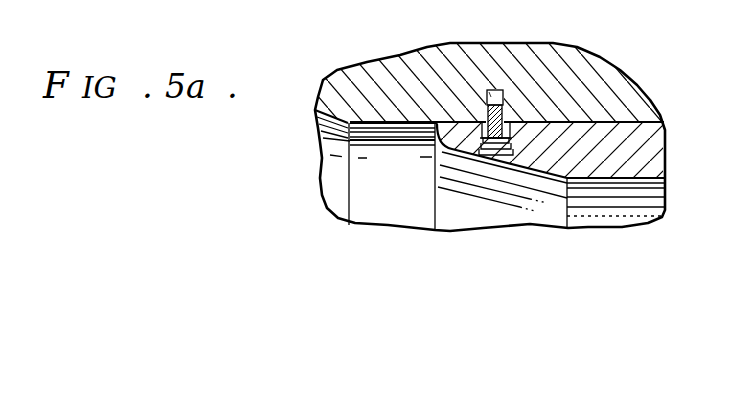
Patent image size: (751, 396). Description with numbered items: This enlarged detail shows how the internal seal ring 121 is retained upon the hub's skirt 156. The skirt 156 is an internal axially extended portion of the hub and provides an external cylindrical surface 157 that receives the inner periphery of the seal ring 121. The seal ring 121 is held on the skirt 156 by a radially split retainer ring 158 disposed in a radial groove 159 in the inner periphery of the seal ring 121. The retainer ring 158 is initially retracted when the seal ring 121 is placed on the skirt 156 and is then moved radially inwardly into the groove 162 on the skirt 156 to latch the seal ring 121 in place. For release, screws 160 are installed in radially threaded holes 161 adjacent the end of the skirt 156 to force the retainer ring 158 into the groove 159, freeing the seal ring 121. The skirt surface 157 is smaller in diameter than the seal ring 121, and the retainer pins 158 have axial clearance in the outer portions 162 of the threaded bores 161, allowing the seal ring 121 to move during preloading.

The internal seal ring 121 is at (573, 56).
The skirt 156 is at (652, 155).
The external cylindrical surface 157 is at (603, 121).
The retainer ring 158 is at (506, 108).
The radial groove 159 is at (493, 90).
The screws 160 is at (452, 158).
The radially threaded holes 161 is at (512, 150).
The groove on the skirt 162 is at (485, 122).